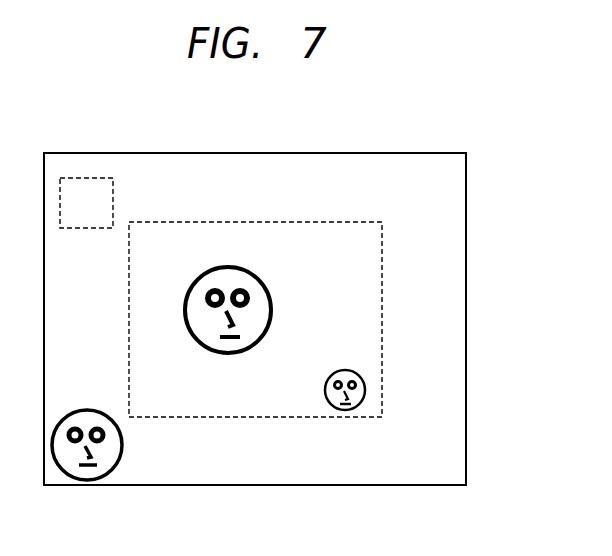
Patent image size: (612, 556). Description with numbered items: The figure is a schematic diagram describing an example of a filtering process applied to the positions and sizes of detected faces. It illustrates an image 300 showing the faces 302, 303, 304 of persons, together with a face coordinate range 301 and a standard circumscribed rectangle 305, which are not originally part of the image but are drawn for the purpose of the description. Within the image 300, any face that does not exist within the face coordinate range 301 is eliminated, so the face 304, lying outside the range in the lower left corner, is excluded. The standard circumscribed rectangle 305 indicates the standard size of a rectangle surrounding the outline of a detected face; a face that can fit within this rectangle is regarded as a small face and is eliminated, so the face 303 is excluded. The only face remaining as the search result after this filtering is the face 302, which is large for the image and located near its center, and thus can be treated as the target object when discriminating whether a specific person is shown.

The image 300 is at (388, 152).
The face coordinate range 301 is at (344, 221).
The face 302 is at (272, 296).
The face 303 is at (345, 370).
The face 304 is at (88, 410).
The standard circumscribed rectangle 305 is at (114, 197).